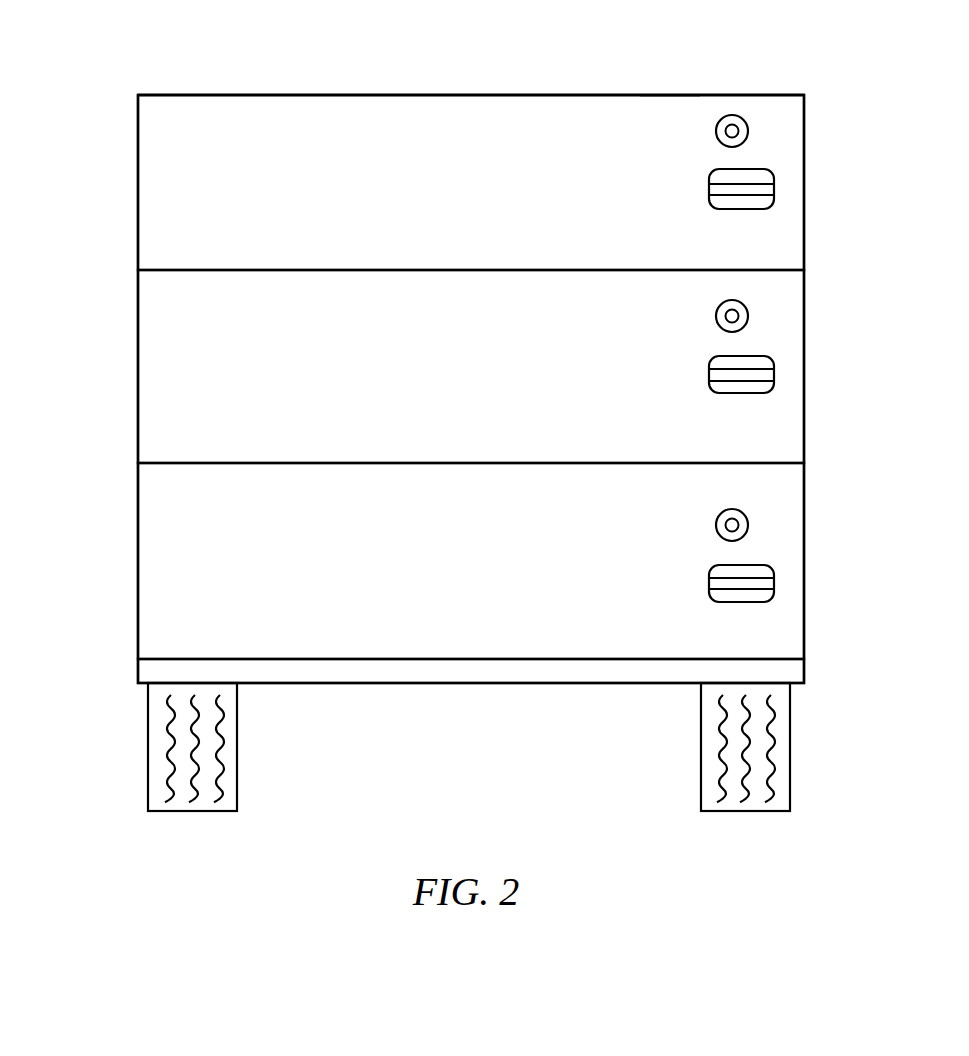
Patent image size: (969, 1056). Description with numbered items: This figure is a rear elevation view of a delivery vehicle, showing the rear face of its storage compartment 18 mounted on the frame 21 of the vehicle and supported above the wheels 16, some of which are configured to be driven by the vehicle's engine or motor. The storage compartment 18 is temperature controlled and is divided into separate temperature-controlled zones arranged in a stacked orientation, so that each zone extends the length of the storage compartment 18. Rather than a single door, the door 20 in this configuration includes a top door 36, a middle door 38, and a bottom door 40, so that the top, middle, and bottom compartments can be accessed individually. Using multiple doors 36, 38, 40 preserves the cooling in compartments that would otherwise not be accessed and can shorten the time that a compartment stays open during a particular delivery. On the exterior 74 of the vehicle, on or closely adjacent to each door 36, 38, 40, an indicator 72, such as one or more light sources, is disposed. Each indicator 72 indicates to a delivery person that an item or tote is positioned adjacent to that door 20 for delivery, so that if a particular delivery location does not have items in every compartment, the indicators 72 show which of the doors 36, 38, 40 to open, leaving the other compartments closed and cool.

The wheels 16 is at (238, 811).
The storage compartment 18 is at (636, 95).
The door 20 is at (138, 230).
The frame 21 is at (147, 675).
The top door 36 is at (472, 137).
The middle door 38 is at (288, 310).
The bottom door 40 is at (433, 639).
The indicator 72 is at (743, 117).
The exterior 74 is at (657, 120).